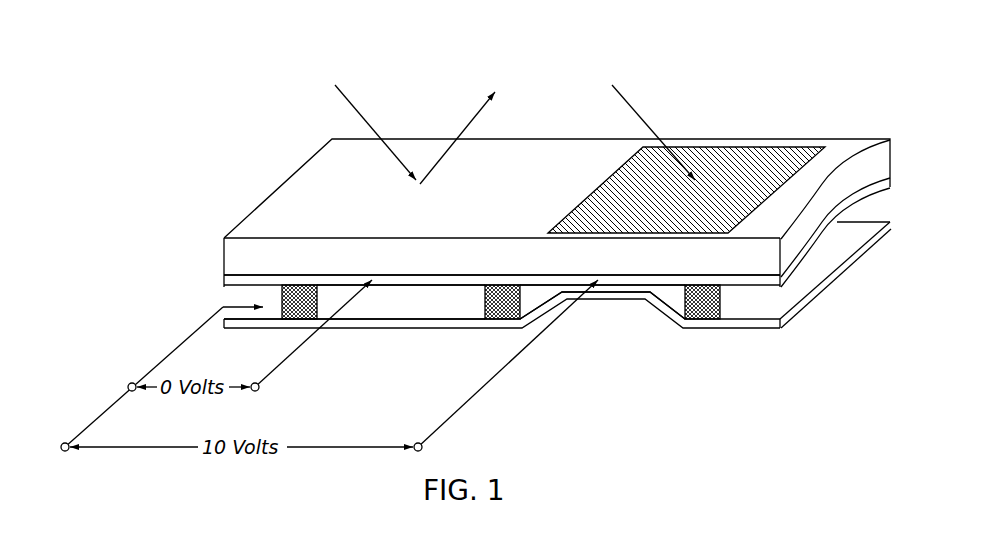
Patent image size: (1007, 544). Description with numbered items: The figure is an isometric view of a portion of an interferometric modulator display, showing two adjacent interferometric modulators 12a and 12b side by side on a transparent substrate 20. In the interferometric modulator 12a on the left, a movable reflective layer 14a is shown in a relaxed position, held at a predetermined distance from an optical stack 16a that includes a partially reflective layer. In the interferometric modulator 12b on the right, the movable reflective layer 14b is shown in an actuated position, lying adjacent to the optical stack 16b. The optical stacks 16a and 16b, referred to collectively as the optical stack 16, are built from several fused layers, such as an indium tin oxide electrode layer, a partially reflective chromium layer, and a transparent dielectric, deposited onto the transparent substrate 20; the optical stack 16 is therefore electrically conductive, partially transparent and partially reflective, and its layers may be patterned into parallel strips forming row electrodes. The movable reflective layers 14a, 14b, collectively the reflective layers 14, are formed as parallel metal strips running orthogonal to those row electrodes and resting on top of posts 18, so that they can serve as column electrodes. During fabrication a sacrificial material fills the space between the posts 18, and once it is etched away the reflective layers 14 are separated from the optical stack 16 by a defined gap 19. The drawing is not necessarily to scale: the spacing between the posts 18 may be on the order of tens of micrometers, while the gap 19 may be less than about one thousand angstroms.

The interferometric modulator 12a is at (327, 197).
The interferometric modulator 12b is at (747, 163).
The reflective layers 14 is at (783, 327).
The movable reflective layer 14a is at (334, 322).
The movable reflective layer 14b is at (547, 310).
The optical stack 16 is at (222, 285).
The optical stack 16a is at (397, 282).
The optical stack 16b is at (580, 291).
The posts 18 is at (300, 323).
The gap 19 is at (205, 302).
The transparent substrate 20 is at (821, 201).